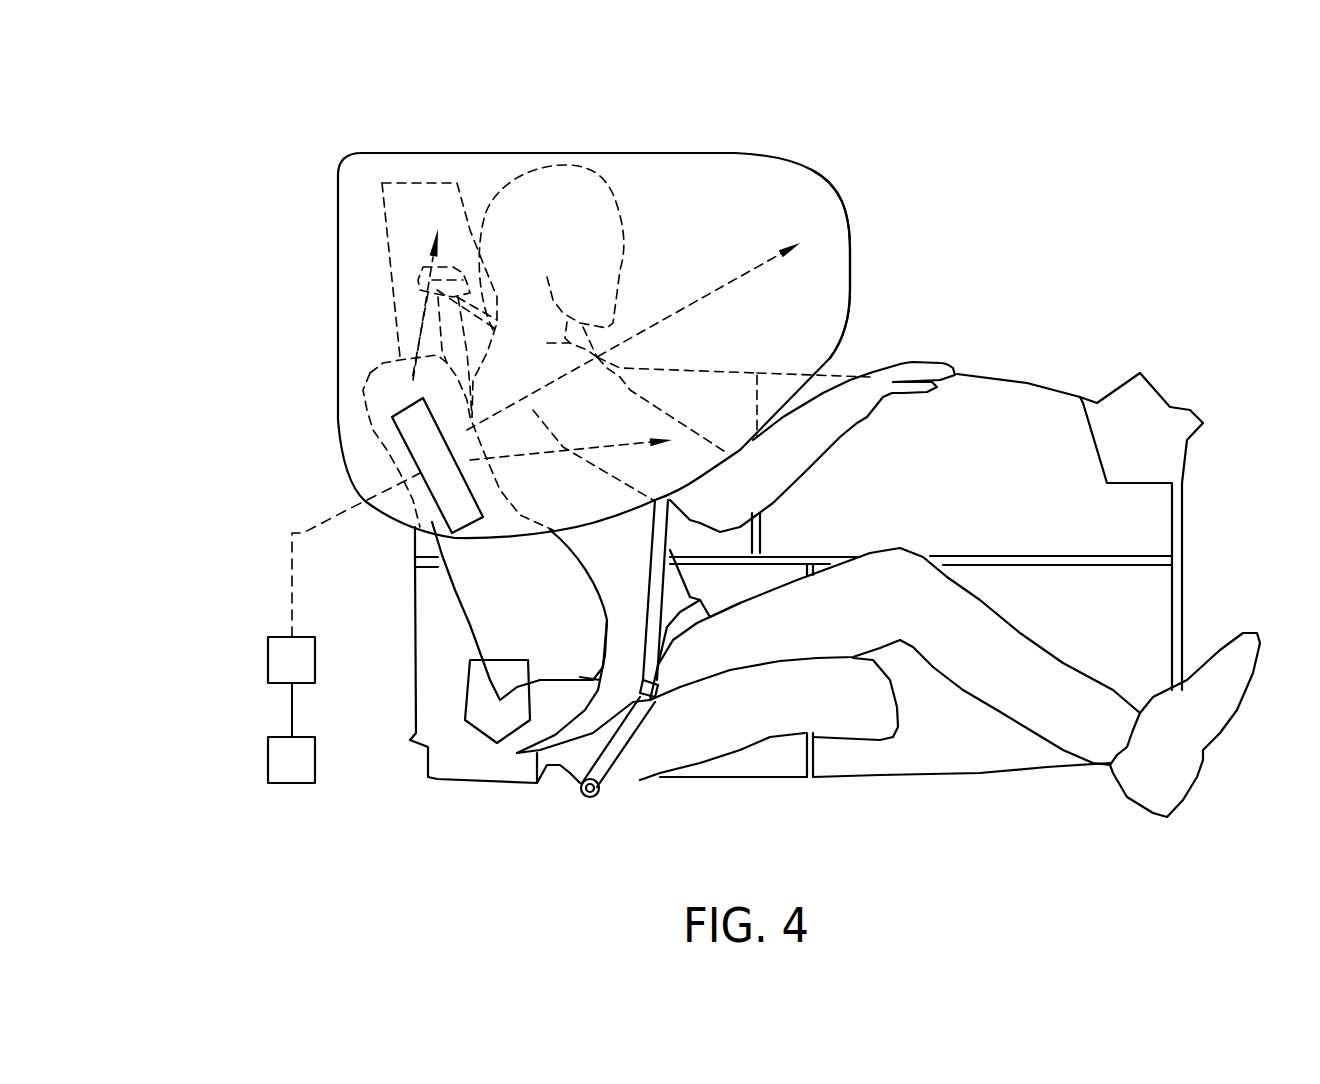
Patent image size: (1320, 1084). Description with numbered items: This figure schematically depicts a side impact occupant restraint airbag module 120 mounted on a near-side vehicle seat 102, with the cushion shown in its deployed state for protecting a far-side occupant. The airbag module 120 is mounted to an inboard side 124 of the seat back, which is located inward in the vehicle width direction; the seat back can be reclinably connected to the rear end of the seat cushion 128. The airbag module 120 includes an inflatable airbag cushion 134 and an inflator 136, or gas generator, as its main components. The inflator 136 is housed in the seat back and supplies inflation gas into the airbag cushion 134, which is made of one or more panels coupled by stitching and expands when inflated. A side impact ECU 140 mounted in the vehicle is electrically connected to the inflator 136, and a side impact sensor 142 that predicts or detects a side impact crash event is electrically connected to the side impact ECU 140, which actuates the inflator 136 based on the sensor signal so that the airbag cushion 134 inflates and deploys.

The near-side vehicle seat 102 is at (425, 793).
The airbag module 120 is at (679, 141).
The inboard side 124 is at (507, 618).
The seat cushion 128 is at (687, 737).
The airbag cushion 134 is at (770, 190).
The inflator 136 is at (417, 433).
The side impact ECU 140 is at (268, 660).
The side impact sensor 142 is at (268, 762).